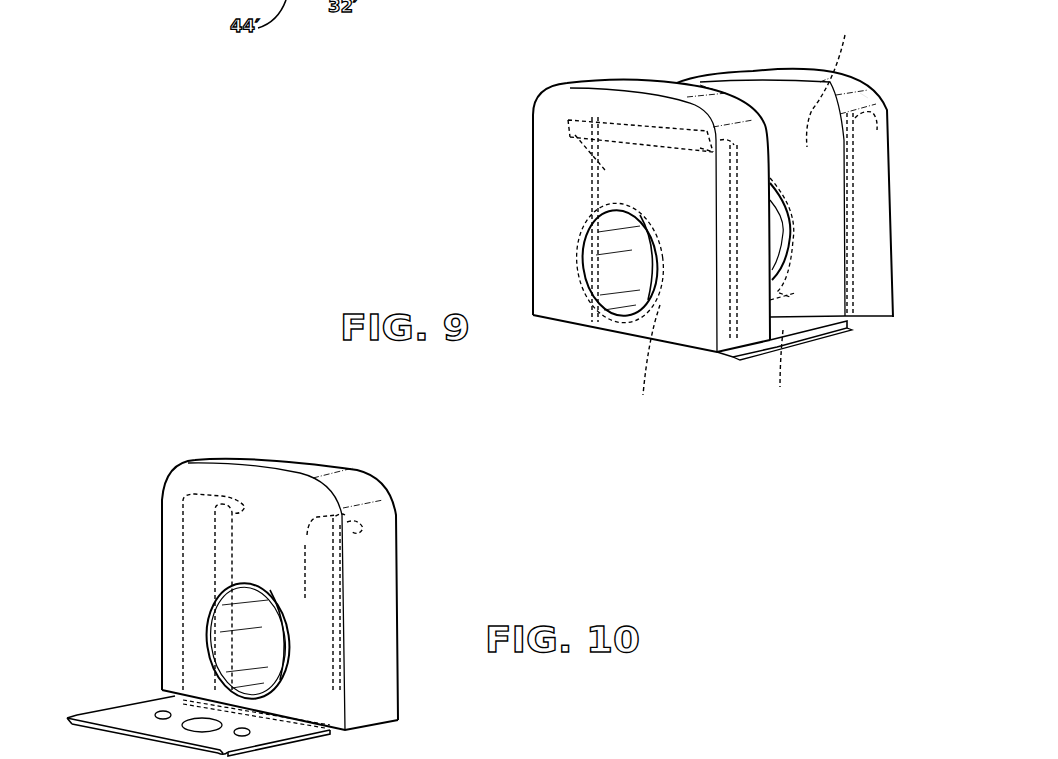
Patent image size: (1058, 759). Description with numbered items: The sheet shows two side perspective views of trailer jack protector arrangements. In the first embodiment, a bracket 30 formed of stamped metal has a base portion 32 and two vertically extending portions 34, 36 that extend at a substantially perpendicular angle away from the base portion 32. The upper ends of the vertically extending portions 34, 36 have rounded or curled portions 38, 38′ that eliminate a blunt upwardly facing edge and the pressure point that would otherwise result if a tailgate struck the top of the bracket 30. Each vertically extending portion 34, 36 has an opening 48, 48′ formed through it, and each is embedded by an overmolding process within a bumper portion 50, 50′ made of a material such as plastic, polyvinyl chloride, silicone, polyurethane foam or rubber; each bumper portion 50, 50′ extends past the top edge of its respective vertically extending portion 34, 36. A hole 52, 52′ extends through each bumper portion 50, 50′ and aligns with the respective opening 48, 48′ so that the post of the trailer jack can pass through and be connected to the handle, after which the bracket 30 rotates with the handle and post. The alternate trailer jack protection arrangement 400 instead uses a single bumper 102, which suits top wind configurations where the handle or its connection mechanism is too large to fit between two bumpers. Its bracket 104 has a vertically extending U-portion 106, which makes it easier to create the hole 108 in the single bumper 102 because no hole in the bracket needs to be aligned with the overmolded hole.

In FIG. 9, the bracket 30 is at (752, 60).
In FIG. 9, the base portion 32 is at (855, 319).
In FIG. 9, the vertically extending portion 34 is at (573, 118).
In FIG. 9, the vertically extending portion 36 is at (833, 80).
In FIG. 9, the curled portion 38 is at (598, 113).
In FIG. 9, the curled portion 38′ is at (877, 117).
In FIG. 9, the opening 48 is at (646, 361).
In FIG. 9, the opening 48′ is at (787, 352).
In FIG. 9, the bumper portion 50 is at (650, 115).
In FIG. 9, the bumper portion 50′ is at (860, 93).
In FIG. 9, the hole 52 is at (612, 272).
In FIG. 9, the hole 52′ is at (780, 232).
In FIG. 10, the trailer jack protection arrangement 400 is at (132, 476).
In FIG. 10, the single bumper 102 is at (375, 590).
In FIG. 10, the bracket 104 is at (290, 746).
In FIG. 10, the vertically extending U-portion 106 is at (363, 518).
In FIG. 10, the hole 108 is at (232, 655).